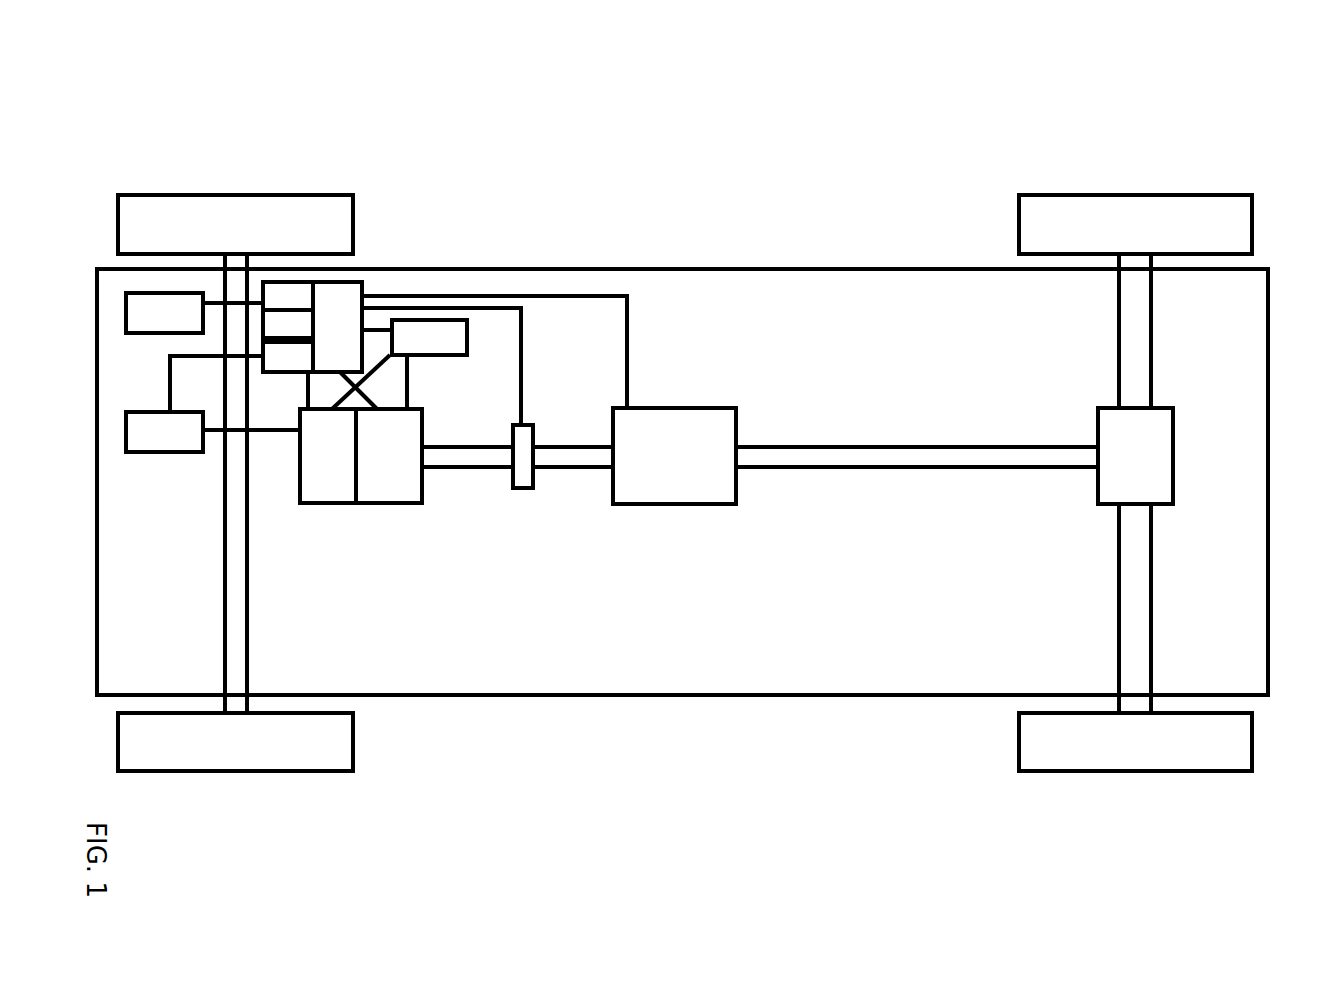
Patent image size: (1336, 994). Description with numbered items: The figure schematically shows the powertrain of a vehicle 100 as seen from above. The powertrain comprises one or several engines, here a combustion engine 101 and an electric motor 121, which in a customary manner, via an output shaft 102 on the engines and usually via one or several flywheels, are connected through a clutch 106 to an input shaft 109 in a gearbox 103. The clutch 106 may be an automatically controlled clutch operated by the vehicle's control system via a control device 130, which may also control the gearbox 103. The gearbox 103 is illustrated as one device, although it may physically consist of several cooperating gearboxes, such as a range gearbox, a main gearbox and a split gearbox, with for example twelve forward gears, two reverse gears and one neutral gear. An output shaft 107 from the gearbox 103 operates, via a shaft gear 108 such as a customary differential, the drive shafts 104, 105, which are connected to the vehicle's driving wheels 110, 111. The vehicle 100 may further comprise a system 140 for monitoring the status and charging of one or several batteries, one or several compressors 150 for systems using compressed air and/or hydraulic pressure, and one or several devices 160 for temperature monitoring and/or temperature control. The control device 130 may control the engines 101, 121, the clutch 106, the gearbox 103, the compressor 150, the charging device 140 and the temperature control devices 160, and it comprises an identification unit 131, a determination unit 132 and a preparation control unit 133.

The vehicle 100 is at (582, 100).
The combustion engine 101 is at (390, 493).
The output shaft 102 is at (447, 452).
The gearbox 103 is at (677, 420).
The drive shaft 104 is at (1140, 327).
The drive shaft 105 is at (1148, 615).
The clutch 106 is at (517, 478).
The output shaft 107 is at (1013, 462).
The shaft gear 108 is at (1167, 448).
The input shaft 109 is at (562, 455).
The driving wheel 110 is at (1247, 743).
The driving wheel 111 is at (1247, 215).
The electric motor 121 is at (330, 493).
The control device 130 is at (445, 353).
The identification unit 131 is at (288, 357).
The determination unit 132 is at (288, 325).
The preparation control unit 133 is at (288, 296).
The system for monitoring the status and charging of batteries 140 is at (429, 364).
The compressor 150 is at (213, 404).
The device for temperature monitoring and/or temperature control 160 is at (194, 313).